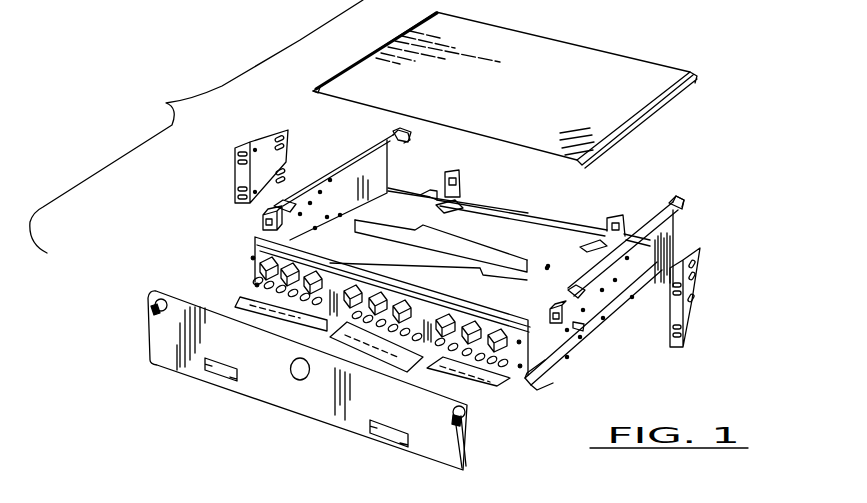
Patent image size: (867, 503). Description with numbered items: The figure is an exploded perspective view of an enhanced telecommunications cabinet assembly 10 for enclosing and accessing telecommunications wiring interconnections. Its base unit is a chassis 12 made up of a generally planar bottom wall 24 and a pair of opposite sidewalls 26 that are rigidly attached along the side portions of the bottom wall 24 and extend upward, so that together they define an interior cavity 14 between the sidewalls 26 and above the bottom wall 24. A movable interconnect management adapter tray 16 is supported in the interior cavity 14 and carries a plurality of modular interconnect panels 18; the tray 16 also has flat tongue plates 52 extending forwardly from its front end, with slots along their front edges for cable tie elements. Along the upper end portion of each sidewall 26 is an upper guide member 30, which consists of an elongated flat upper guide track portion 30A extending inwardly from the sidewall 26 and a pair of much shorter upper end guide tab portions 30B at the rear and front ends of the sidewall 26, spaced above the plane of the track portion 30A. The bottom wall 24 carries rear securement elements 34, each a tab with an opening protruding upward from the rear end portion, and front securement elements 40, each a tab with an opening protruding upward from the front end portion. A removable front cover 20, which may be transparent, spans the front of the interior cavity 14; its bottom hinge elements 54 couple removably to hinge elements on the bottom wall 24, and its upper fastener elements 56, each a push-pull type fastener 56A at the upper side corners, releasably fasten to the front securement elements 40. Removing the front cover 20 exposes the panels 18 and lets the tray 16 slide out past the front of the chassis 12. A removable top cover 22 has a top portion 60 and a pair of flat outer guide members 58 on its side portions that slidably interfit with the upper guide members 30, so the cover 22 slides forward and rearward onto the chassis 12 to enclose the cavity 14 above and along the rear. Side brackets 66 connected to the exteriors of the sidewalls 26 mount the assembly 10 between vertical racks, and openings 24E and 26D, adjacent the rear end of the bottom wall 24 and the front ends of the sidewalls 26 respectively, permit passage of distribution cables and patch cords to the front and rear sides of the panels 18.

The telecommunications cabinet assembly 10 is at (165, 104).
The chassis 12 is at (643, 290).
The interior cavity 14 is at (560, 212).
The movable interconnect management adapter tray 16 is at (547, 376).
The modular interconnect panels 18 is at (470, 298).
The front cover 20 is at (305, 403).
The top cover 22 is at (642, 90).
The bottom wall 24 is at (517, 207).
The opening 24E is at (420, 193).
The sidewalls 26 is at (387, 166).
The opening 26D is at (420, 258).
The upper guide member 30 is at (328, 172).
The upper guide track portion 30A is at (312, 170).
The upper end guide tab portions 30B is at (392, 132).
The rear securement elements 34 is at (462, 183).
The front securement elements 40 is at (264, 228).
The tongue plates 52 is at (253, 296).
The bottom hinge elements 54 is at (213, 372).
The upper fastener elements 56 is at (154, 303).
The push-pull type fastener 56A is at (152, 311).
The outer guide members 58 is at (355, 66).
The top portion 60 is at (540, 124).
The side brackets 66 is at (235, 170).